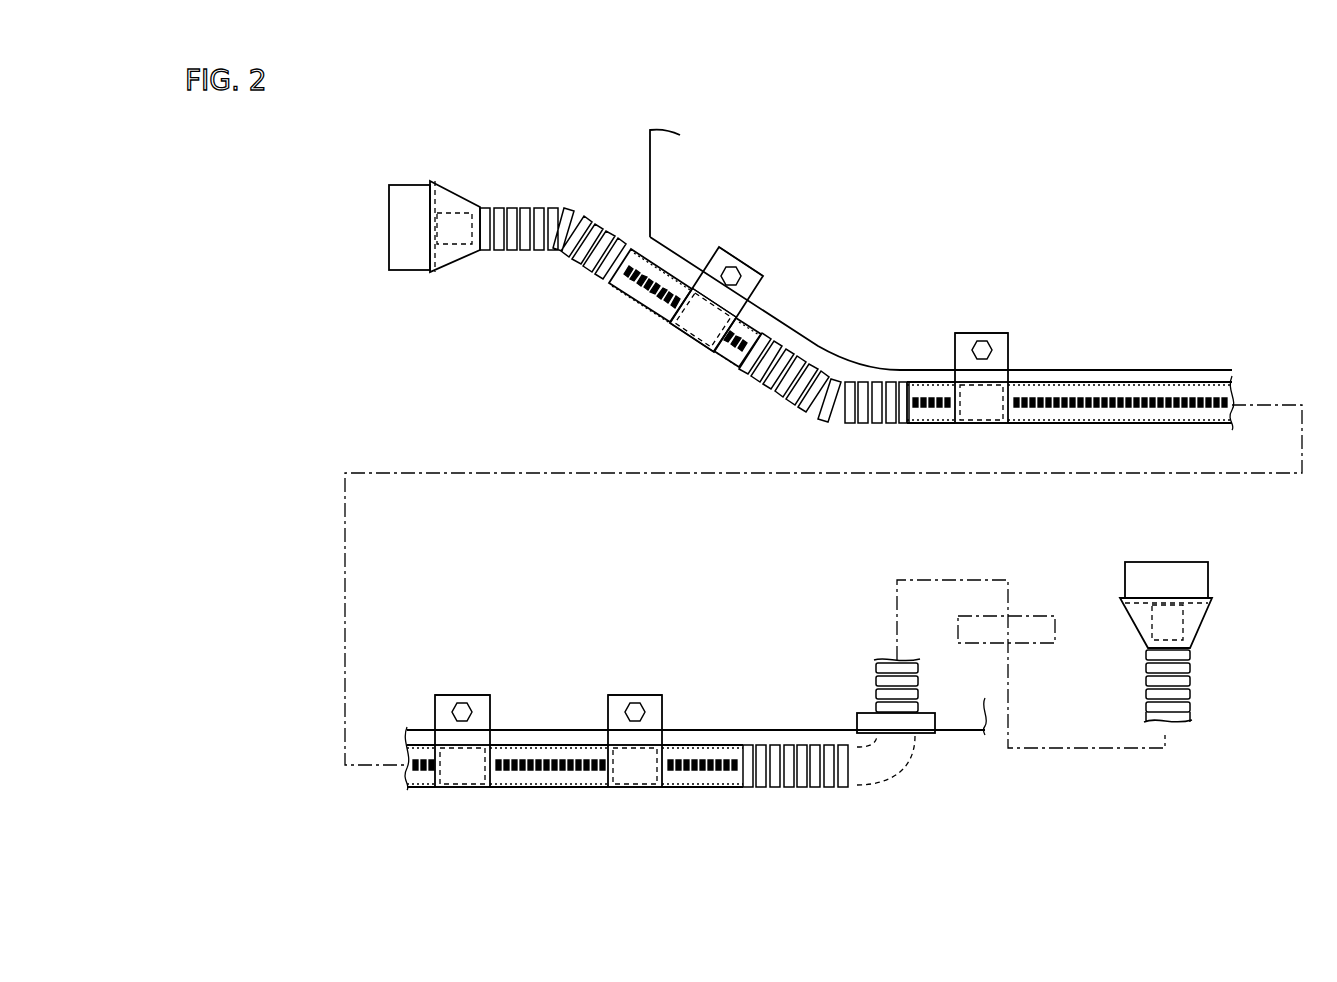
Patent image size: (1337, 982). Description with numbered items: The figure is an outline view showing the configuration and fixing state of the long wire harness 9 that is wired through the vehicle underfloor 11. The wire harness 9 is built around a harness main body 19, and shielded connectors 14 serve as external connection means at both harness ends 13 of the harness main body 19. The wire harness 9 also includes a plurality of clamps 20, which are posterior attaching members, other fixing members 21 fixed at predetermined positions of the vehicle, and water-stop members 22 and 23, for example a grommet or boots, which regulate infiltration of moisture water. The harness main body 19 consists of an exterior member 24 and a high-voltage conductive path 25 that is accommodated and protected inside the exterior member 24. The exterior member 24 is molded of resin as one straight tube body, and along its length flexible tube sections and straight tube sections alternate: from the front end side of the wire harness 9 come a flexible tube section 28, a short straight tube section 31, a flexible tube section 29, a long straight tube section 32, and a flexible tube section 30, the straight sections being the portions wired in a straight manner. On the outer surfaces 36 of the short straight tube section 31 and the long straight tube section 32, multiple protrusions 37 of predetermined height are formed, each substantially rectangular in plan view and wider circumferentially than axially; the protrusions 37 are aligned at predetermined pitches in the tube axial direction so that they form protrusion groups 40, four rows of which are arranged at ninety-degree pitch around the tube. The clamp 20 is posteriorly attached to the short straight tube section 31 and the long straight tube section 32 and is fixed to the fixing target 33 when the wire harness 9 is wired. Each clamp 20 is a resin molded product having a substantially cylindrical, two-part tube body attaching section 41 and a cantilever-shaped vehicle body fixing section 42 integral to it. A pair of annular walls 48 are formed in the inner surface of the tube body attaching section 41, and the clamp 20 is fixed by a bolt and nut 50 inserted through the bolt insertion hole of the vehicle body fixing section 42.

The wire harness 9 is at (665, 368).
The vehicle underfloor 11 is at (1234, 376).
The harness end 13 is at (850, 459).
The shielded connector 14 is at (415, 270).
The harness main body 19 is at (775, 398).
The clamp 20 is at (1090, 312).
The fixing member 21 is at (1040, 616).
The water-stop member 22 is at (455, 183).
The water-stop member 23 is at (1200, 630).
The exterior member 24 is at (1050, 434).
The high-voltage conductive path 25 is at (455, 238).
The flexible tube section 28 is at (540, 207).
The flexible tube section 29 is at (818, 424).
The flexible tube section 30 is at (832, 790).
The short straight tube section 31 is at (657, 312).
The long straight tube section 32 is at (1130, 396).
The fixing target 33 is at (664, 214).
The outer surface 36 is at (622, 276).
The protrusion 37 is at (636, 297).
The protrusion group 40 is at (1185, 417).
The tube body attaching section 41 is at (997, 407).
The vehicle body fixing section 42 is at (988, 363).
The annular wall 48 is at (673, 340).
The bolt and nut 50 is at (726, 270).